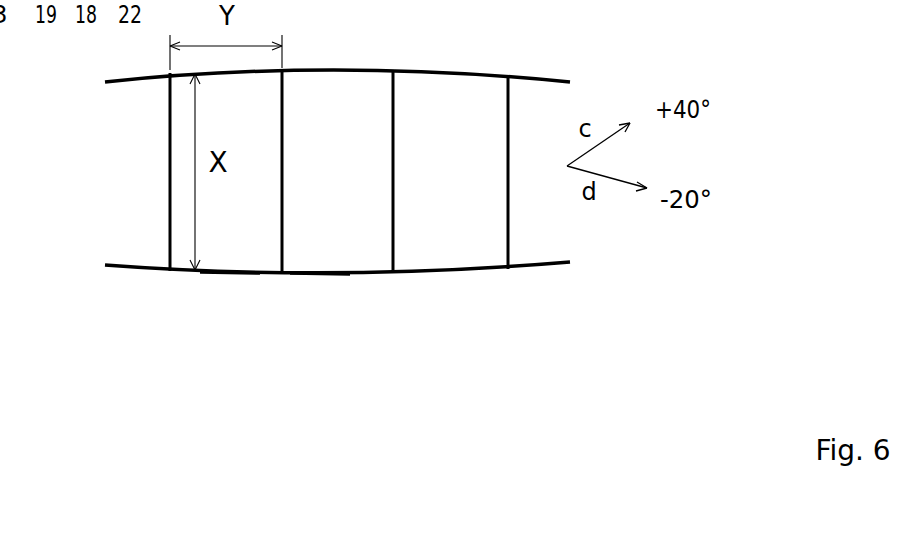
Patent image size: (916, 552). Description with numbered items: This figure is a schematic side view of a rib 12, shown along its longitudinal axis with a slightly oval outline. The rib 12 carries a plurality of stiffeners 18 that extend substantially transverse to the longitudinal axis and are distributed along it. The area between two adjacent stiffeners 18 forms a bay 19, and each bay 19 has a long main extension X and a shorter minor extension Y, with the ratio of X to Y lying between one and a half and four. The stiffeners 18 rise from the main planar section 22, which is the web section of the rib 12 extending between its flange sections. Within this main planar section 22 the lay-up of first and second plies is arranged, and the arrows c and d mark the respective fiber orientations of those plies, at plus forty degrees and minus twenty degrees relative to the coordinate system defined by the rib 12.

The rib 12 is at (493, 50).
The stiffener 18 is at (168, 273).
The bay 19 is at (230, 264).
The main planar section 22 is at (317, 289).